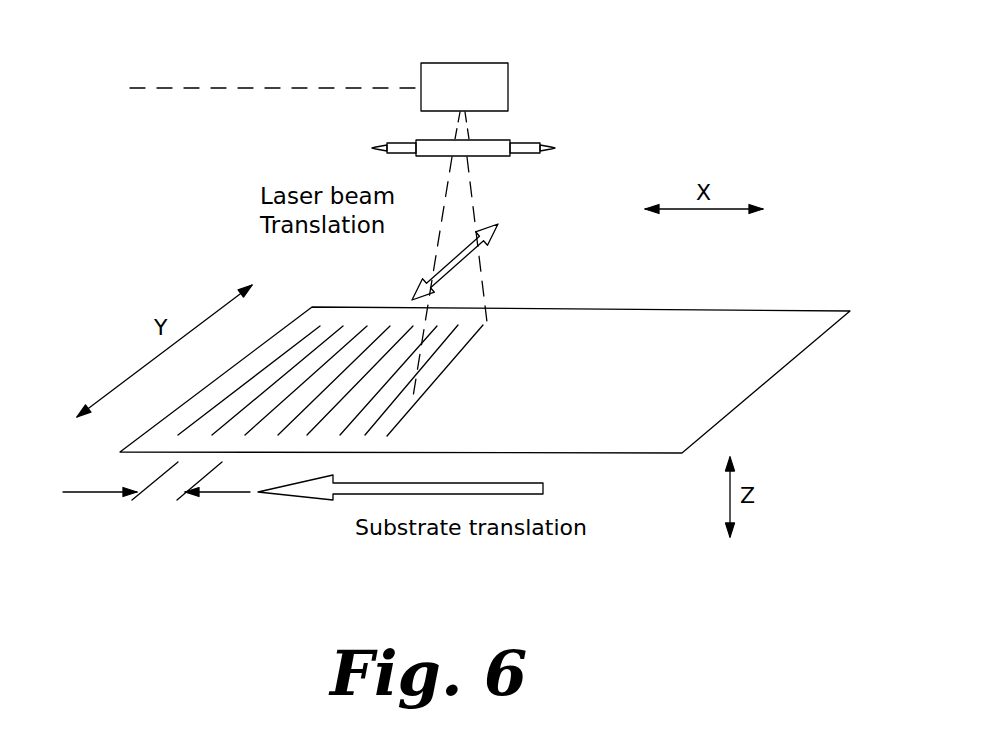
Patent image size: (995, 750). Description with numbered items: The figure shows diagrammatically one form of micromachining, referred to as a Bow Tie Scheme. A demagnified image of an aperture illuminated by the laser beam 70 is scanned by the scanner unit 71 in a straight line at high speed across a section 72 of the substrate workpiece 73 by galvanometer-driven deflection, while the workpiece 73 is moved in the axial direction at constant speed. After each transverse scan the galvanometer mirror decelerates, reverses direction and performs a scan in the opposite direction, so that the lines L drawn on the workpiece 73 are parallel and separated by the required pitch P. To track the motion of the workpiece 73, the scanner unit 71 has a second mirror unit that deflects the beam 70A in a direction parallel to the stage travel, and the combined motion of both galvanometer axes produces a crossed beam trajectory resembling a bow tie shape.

The laser beam 70 is at (291, 88).
The scanner unit 71 is at (482, 77).
The beam 70A is at (478, 210).
The section of substrate workpiece 72 is at (528, 326).
The substrate workpiece 73 is at (624, 391).
The lines L is at (295, 372).
The pitch P is at (170, 483).